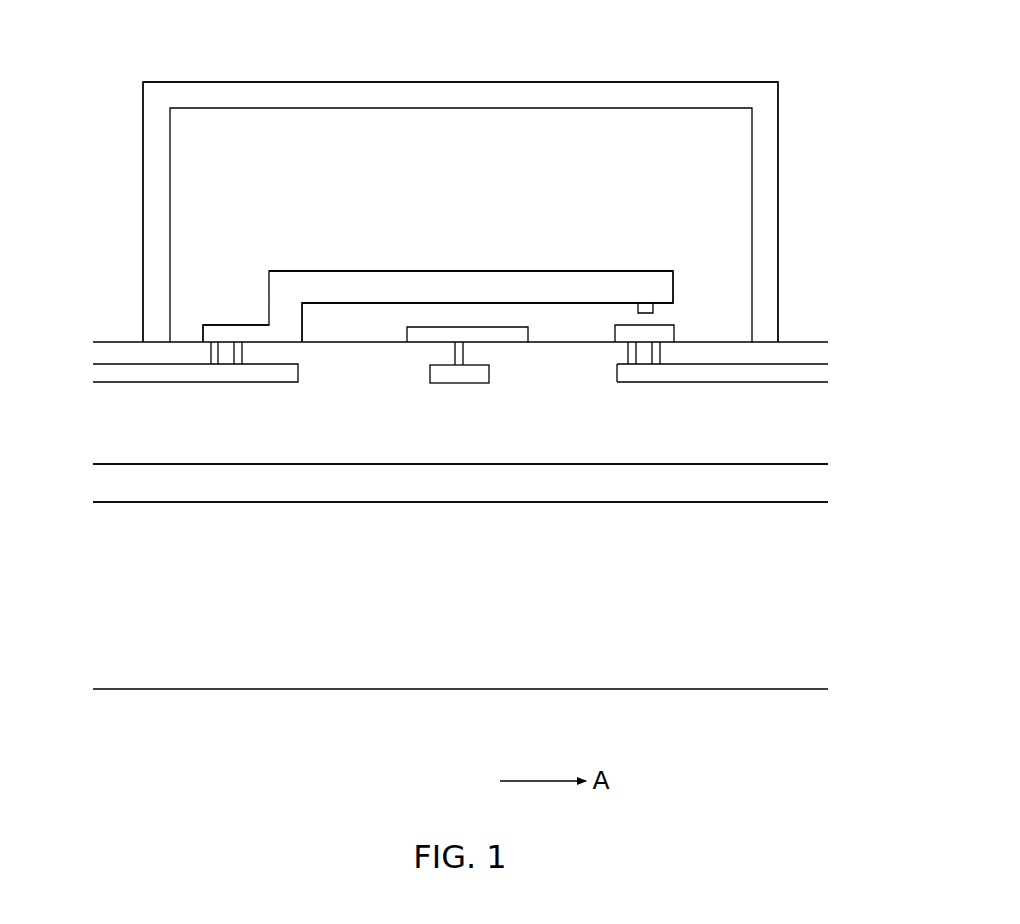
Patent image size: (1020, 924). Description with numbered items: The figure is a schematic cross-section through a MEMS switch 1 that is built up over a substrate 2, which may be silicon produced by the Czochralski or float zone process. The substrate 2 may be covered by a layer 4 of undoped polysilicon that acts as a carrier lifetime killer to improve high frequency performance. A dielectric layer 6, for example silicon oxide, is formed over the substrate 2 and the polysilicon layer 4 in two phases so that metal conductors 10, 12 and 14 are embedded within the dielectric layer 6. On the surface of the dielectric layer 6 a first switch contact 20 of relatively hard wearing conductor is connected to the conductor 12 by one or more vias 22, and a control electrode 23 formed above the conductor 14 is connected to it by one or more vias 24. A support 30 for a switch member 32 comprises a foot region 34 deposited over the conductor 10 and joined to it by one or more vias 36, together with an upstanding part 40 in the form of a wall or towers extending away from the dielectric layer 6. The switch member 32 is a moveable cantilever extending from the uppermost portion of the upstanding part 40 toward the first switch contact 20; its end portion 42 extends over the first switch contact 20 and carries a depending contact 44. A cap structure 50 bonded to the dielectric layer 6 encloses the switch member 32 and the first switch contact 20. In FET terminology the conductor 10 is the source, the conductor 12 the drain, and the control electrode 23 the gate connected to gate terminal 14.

The MEMS switch 1 is at (745, 58).
The substrate 2 is at (430, 650).
The layer of undoped polysilicon 4 is at (589, 496).
The dielectric layer 6 is at (460, 403).
The conductor 10 is at (145, 380).
The conductor 12 is at (650, 377).
The conductor 14 is at (442, 373).
The first switch contact 20 is at (677, 333).
The vias 22 is at (627, 352).
The control electrode 23 is at (532, 328).
The vias 24 is at (465, 350).
The support 30 is at (276, 296).
The switch member 32 is at (470, 298).
The foot region 34 is at (216, 324).
The vias 36 is at (244, 350).
The upstanding part 40 is at (296, 315).
The end portion 42 is at (631, 270).
The depending contact 44 is at (657, 311).
The cap structure 50 is at (771, 182).